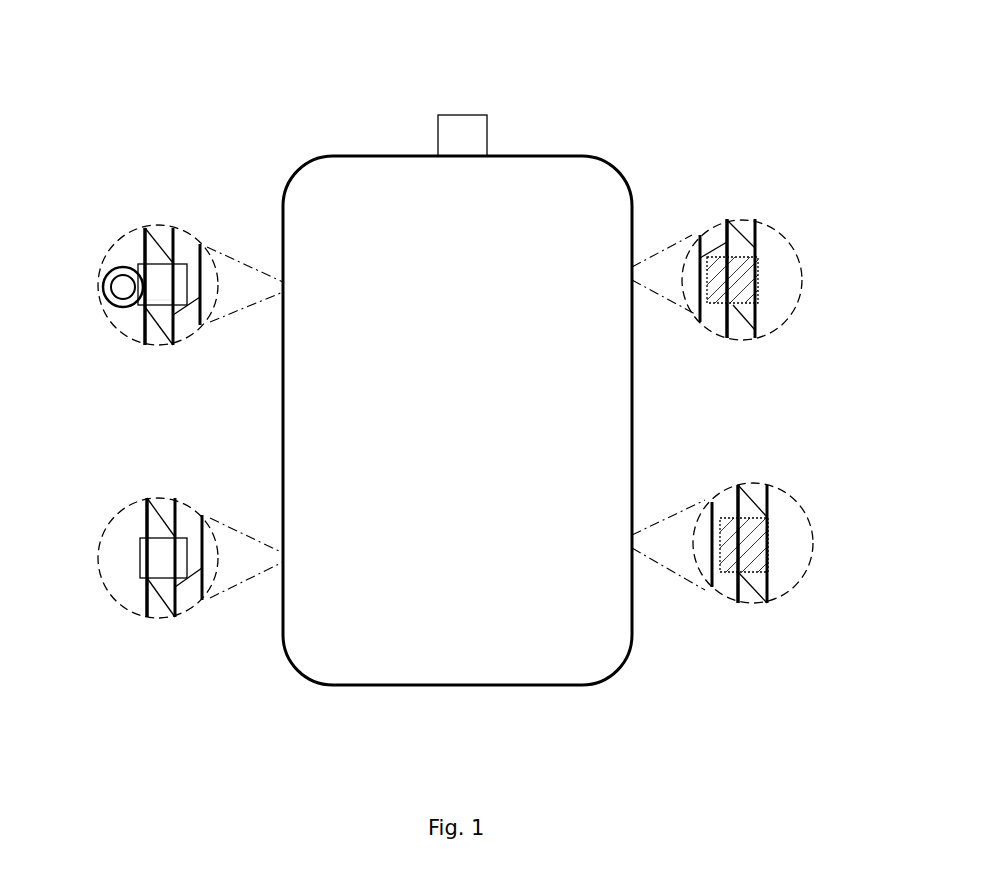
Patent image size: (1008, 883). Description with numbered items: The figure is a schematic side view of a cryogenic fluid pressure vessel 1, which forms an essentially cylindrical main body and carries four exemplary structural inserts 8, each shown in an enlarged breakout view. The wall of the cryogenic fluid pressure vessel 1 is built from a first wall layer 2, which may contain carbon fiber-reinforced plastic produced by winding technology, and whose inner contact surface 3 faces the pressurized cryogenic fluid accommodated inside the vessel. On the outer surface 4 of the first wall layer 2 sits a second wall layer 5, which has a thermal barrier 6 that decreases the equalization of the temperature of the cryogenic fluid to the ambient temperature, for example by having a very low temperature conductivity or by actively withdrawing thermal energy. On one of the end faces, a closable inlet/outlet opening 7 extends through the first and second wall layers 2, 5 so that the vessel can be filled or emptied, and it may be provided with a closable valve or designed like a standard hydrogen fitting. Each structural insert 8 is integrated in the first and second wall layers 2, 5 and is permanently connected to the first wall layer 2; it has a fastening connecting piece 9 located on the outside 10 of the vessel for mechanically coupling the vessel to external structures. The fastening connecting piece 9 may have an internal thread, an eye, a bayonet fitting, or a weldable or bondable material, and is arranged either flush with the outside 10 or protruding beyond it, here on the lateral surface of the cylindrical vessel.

The cryogenic fluid pressure vessel 1 is at (600, 83).
The first wall layer 2 is at (187, 248).
The inner contact surface 3 is at (204, 284).
The outer surface 4 is at (168, 600).
The second wall layer 5 is at (160, 233).
The thermal barrier 6 is at (441, 418).
The closable inlet/outlet opening 7 is at (457, 132).
The structural insert 8 is at (145, 296).
The fastening connecting piece 9 is at (150, 293).
The outside 10 is at (145, 247).